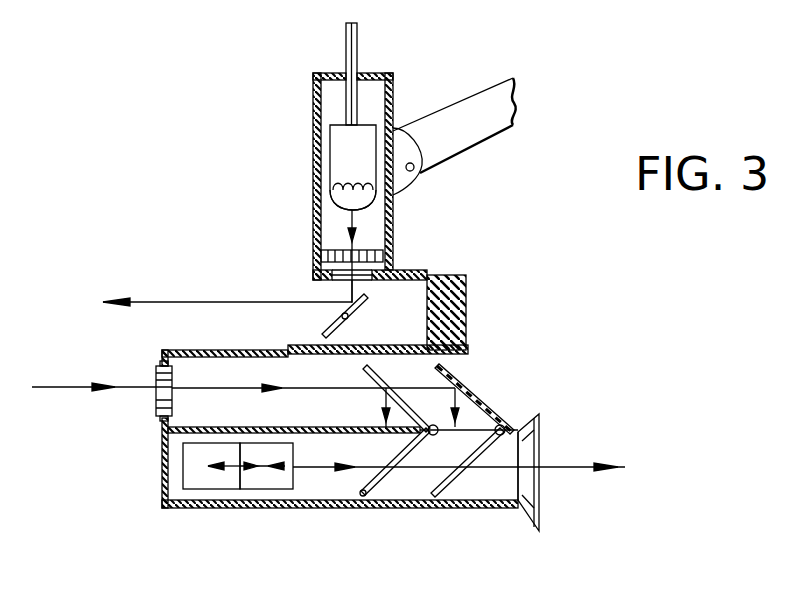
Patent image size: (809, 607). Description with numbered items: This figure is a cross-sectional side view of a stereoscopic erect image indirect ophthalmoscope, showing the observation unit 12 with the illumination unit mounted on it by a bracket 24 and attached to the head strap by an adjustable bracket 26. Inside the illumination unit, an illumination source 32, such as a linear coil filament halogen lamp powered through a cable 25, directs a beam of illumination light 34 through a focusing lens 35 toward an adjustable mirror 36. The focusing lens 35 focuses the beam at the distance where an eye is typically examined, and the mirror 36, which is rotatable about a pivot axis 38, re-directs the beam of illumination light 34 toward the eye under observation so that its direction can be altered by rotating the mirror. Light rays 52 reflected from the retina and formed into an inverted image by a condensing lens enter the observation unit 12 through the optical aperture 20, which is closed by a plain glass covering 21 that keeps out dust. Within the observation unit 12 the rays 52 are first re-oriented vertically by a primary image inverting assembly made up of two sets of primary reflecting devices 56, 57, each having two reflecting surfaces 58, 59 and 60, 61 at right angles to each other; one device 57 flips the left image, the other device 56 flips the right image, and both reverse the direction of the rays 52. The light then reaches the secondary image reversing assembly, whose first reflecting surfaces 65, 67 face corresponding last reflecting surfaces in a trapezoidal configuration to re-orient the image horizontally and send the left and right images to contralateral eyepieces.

The observation unit 12 is at (393, 470).
The optical aperture 20 is at (157, 400).
The plain glass covering 21 is at (155, 377).
The bracket 24 is at (470, 315).
The cable 25 is at (348, 45).
The adjustable bracket 26 is at (452, 118).
The illumination source 32 is at (343, 157).
The beam of illumination light 34 is at (350, 212).
The focusing lens 35 is at (368, 250).
The adjustable mirror 36 is at (366, 303).
The pivot axis 38 is at (341, 320).
The light rays 52 is at (64, 386).
The primary reflecting device 56 is at (434, 435).
The primary reflecting device 57 is at (501, 435).
The reflecting surface 58 is at (430, 484).
The reflecting surface 59 is at (447, 373).
The reflecting surface 60 is at (360, 483).
The reflecting surface 61 is at (366, 362).
The first reflecting surface 65 is at (222, 483).
The first reflecting surface 67 is at (265, 483).